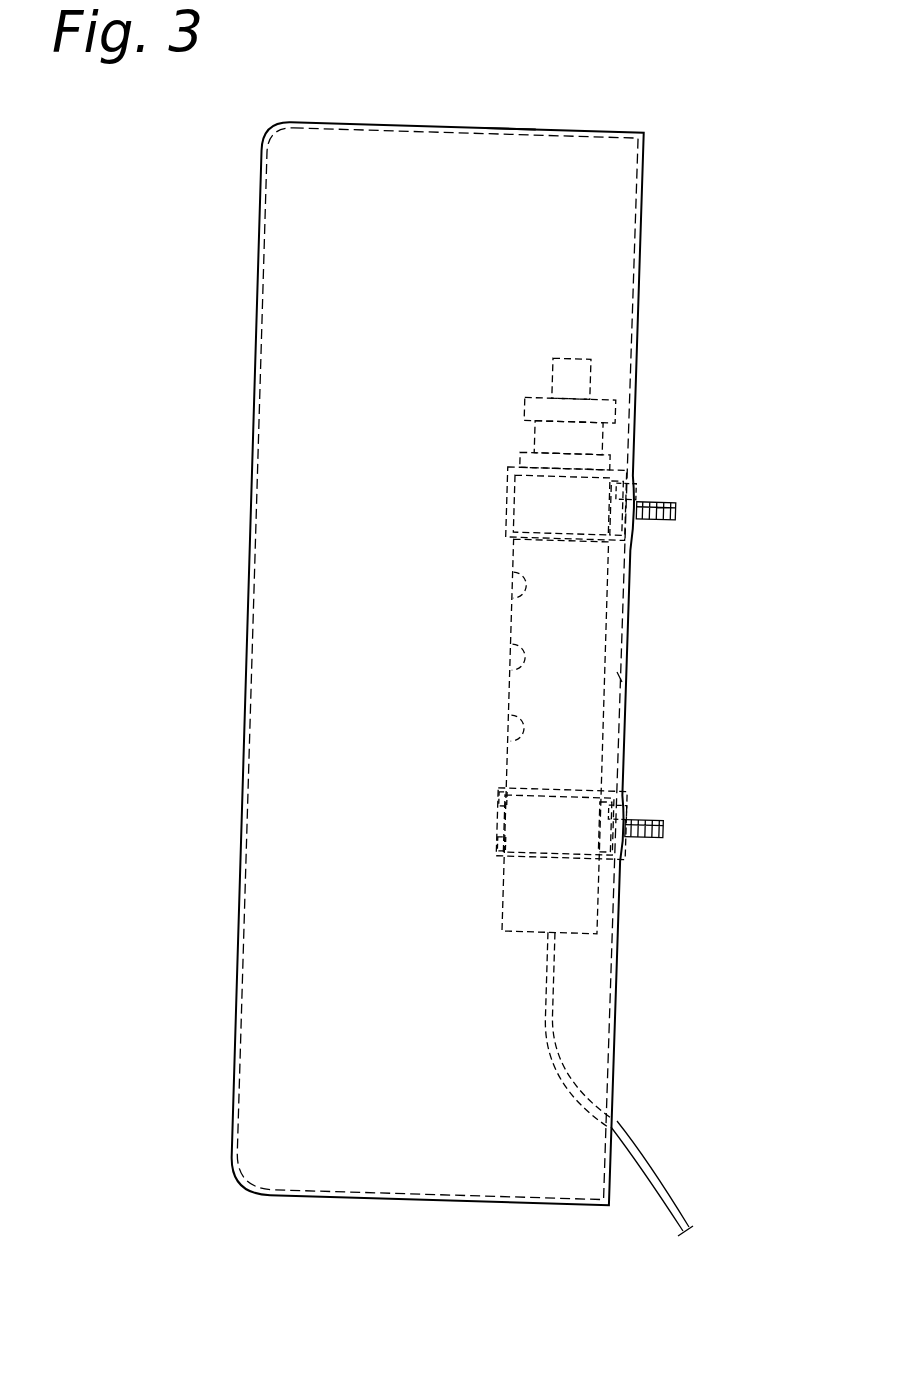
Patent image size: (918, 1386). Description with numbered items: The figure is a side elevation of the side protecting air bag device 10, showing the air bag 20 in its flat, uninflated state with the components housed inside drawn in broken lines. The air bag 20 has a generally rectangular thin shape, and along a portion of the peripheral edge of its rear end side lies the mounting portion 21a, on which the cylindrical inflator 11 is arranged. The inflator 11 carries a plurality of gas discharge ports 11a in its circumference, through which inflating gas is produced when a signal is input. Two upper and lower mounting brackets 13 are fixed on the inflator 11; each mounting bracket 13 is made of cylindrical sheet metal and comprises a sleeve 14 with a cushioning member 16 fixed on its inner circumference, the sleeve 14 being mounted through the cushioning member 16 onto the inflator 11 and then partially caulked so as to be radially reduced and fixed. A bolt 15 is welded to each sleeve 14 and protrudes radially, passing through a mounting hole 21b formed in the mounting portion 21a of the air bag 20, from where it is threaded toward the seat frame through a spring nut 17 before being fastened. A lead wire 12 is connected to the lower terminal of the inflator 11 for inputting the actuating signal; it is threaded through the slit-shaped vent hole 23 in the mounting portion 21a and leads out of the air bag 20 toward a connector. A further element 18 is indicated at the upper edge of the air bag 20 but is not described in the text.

The side protecting air bag device 10 is at (682, 111).
The inflator 11 is at (592, 663).
The gas discharge ports 11a is at (513, 583).
The lead wire 12 is at (665, 1194).
The mounting brackets 13 is at (505, 506).
The sleeve 14 is at (498, 852).
The bolt 15 is at (664, 831).
The cushioning member 16 is at (497, 808).
The spring nut 17 is at (638, 488).
The support shaft 18 is at (494, 129).
The air bag 20 is at (278, 430).
The mounting portion 21a is at (620, 677).
The mounting holes 21b is at (636, 528).
The vent hole 23 is at (612, 1082).